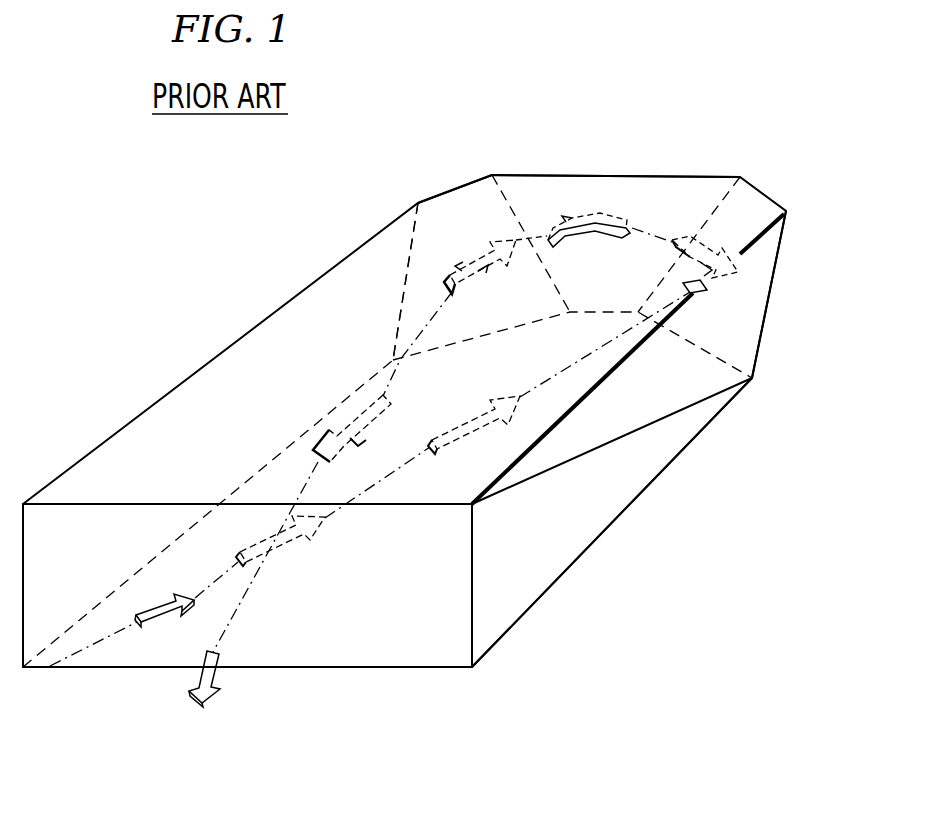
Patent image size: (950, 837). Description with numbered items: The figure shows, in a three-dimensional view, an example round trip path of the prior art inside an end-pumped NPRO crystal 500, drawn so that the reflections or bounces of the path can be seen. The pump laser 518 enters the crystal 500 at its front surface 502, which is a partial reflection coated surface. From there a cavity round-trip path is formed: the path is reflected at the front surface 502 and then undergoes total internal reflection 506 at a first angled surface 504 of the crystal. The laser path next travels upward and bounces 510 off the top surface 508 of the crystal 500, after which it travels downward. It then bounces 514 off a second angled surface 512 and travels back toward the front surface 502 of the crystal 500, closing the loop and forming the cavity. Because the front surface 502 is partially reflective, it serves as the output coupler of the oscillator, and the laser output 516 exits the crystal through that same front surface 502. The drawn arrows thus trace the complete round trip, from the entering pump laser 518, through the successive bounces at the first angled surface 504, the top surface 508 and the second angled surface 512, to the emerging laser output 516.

The NPRO crystal 500 is at (240, 229).
The front surface 502 is at (333, 668).
The first angled surface 504 is at (765, 316).
The total internal reflection 506 is at (734, 271).
The top surface 508 is at (660, 175).
The bounce off top surface 510 is at (600, 216).
The second angled surface 512 is at (445, 192).
The bounce off second angled surface 514 is at (458, 278).
The laser output 516 is at (200, 706).
The pump laser 518 is at (146, 632).